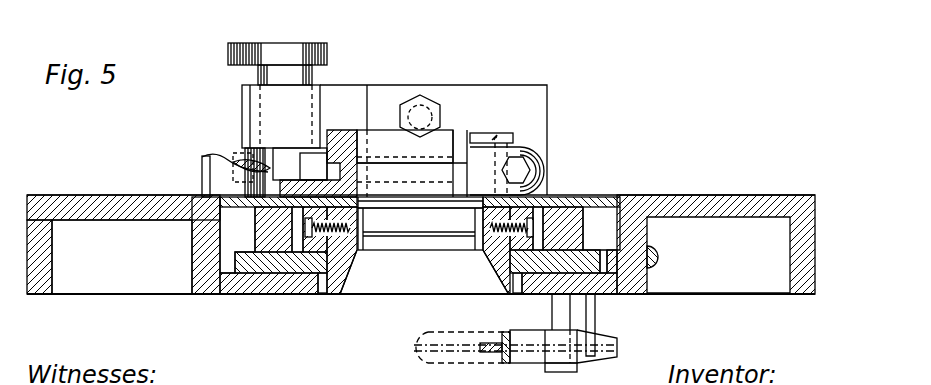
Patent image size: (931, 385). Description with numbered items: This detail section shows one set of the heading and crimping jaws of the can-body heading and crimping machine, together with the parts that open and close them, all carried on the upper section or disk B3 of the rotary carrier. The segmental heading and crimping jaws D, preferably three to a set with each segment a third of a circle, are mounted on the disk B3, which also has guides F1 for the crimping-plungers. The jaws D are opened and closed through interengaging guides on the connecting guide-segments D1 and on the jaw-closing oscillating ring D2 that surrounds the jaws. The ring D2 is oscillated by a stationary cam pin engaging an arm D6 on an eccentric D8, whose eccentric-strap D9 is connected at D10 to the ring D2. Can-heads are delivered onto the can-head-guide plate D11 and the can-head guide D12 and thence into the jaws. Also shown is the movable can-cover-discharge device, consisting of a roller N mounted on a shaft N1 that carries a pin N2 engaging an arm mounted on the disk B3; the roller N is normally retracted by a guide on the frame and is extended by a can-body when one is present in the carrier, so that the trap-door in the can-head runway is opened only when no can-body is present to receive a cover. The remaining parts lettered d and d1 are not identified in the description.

The upper section of the carrier B3 is at (720, 196).
The can heading and crimping jaws D is at (357, 258).
The connecting guide-segments D1 is at (536, 252).
The jaw-closing oscillating ring D2 is at (554, 222).
The arm D6 is at (327, 44).
The eccentric D8 is at (262, 158).
The eccentric-strap D9 is at (313, 165).
The connection D10 is at (500, 128).
The can-head-guide plate D11 is at (604, 198).
The can-head guide D12 is at (353, 133).
The guides for the crimping-plungers F1 is at (210, 164).
The roller N is at (421, 356).
The shaft N1 is at (668, 255).
The pin N2 is at (592, 311).
The jaw inclined face d is at (347, 268).
The connecting rod d1 is at (367, 233).